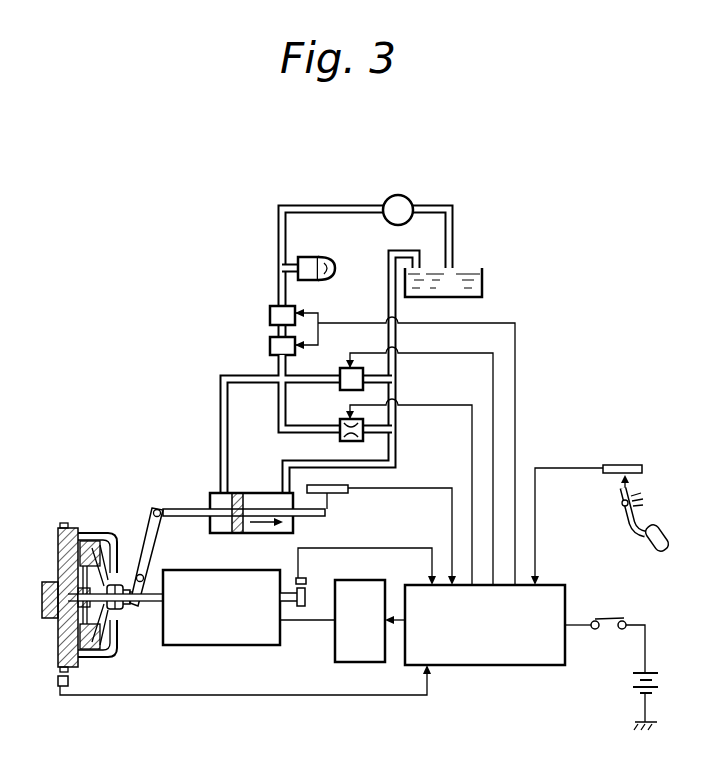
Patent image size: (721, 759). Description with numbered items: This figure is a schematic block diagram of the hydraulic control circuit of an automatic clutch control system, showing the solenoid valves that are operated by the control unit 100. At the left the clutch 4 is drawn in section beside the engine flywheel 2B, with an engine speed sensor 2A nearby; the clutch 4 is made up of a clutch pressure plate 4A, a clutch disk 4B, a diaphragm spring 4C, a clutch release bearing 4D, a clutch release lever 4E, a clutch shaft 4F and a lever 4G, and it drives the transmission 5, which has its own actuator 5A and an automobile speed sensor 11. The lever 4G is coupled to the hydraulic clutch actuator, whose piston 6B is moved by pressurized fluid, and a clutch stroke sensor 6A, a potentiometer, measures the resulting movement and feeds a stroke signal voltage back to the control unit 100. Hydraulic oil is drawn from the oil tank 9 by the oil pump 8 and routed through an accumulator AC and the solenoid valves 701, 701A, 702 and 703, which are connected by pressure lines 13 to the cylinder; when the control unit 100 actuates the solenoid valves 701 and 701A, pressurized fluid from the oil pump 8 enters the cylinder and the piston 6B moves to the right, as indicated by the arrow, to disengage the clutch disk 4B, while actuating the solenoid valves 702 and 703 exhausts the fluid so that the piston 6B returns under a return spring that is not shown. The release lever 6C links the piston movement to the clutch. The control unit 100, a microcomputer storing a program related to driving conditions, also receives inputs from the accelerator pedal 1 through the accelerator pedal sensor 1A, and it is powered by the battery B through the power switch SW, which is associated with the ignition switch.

The accelerator pedal 1 is at (626, 531).
The accelerator pedal sensor 1A is at (626, 465).
The engine speed sensor 2A is at (58, 687).
The engine flywheel 2B is at (57, 538).
The clutch 4 is at (112, 592).
The clutch pressure plate 4A is at (97, 550).
The clutch disk 4B is at (80, 528).
The diaphragm spring 4C is at (118, 630).
The clutch release bearing 4D is at (123, 618).
The clutch release lever 4E is at (135, 617).
The clutch shaft 4F is at (64, 622).
The lever 4G is at (172, 517).
The transmission 5 is at (238, 645).
The actuator 5A is at (335, 648).
The clutch stroke sensor 6A is at (340, 494).
The piston 6B is at (250, 493).
The release lever 6C is at (157, 508).
The oil pump 8 is at (404, 195).
The oil tank 9 is at (482, 272).
The automobile speed sensor 11 is at (308, 581).
The hydraulic pressure line 13 is at (229, 402).
The control unit 100 is at (484, 666).
The solenoid valve 701 is at (270, 346).
The solenoid valve 701A is at (270, 313).
The solenoid valve 702 is at (357, 442).
The solenoid valve 703 is at (344, 367).
The accumulator AC is at (326, 257).
The power switch SW is at (614, 616).
The battery B is at (660, 683).